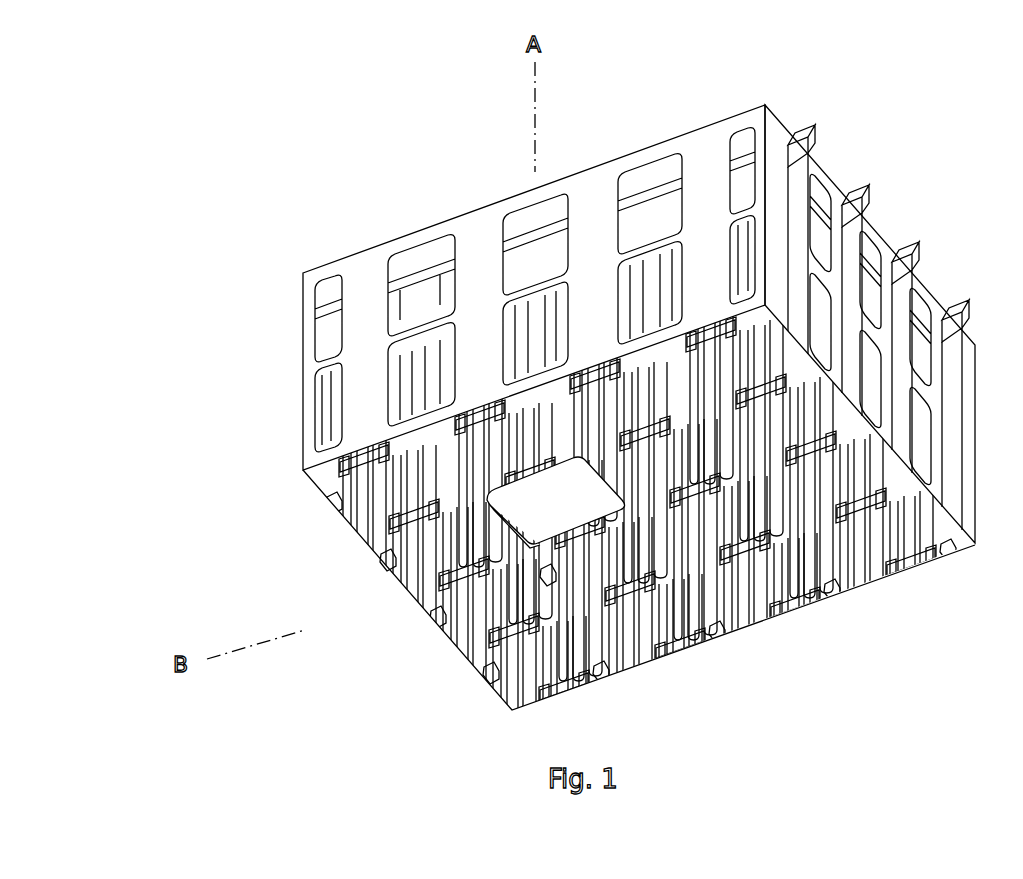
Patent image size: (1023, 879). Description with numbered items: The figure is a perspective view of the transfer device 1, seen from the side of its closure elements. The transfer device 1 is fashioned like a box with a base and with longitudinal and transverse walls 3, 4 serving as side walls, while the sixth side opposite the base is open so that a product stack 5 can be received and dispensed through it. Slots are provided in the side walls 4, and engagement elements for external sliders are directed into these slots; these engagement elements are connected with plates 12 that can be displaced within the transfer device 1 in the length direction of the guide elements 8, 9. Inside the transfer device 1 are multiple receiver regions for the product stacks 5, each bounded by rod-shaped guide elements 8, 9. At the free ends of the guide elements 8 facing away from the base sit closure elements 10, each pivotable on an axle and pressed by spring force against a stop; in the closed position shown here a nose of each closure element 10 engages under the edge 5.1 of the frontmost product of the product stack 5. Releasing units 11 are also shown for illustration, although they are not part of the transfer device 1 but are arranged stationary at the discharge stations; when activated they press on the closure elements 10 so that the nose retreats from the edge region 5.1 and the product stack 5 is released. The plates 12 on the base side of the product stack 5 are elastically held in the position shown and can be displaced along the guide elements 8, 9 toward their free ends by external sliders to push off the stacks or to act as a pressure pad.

The transfer device 1 is at (865, 158).
The longitudinal wall 3 is at (307, 320).
The transverse wall 4 is at (965, 362).
The product stack 5 is at (442, 617).
The edge of the frontmost product 5.1 is at (625, 505).
The guide element 8 is at (388, 556).
The guide element 9 is at (780, 482).
The closure element 10 is at (577, 556).
The releasing unit 11 is at (545, 580).
The plate 12 is at (412, 295).